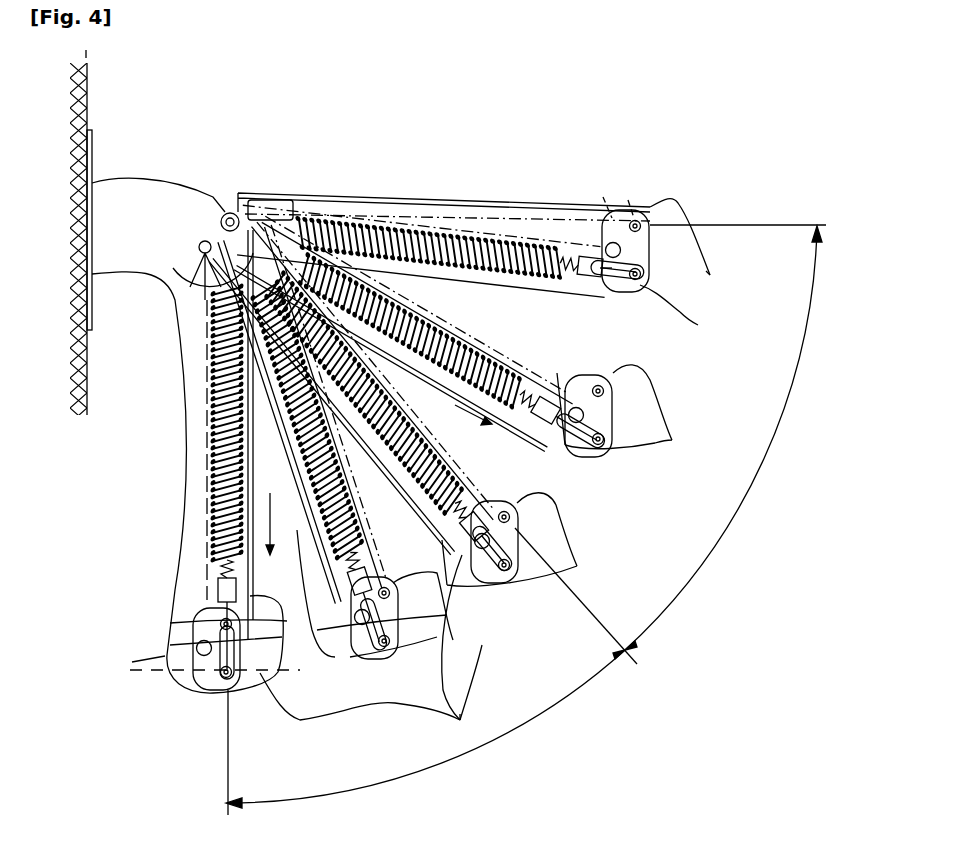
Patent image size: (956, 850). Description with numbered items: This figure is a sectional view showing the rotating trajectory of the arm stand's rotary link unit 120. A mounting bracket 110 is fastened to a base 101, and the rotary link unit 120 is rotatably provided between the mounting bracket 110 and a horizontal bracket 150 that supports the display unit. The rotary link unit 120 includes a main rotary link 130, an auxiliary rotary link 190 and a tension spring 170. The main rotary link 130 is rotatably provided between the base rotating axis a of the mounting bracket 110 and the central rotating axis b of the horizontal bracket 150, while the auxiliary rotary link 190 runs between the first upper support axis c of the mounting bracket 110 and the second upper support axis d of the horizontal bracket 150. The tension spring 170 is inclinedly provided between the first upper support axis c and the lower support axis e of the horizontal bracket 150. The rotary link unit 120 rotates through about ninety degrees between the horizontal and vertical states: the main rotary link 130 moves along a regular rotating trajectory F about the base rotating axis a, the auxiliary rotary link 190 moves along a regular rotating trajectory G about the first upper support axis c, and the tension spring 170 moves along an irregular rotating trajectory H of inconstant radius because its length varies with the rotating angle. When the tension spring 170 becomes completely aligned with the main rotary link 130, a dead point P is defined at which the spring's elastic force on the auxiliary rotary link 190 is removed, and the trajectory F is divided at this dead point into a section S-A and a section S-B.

The base 101 is at (97, 322).
The mounting bracket 110 is at (155, 205).
The rotary link unit 120 is at (384, 376).
The main rotary link 130 is at (381, 194).
The horizontal bracket 150 is at (663, 205).
The tension spring 170 is at (516, 248).
The auxiliary rotary link 190 is at (488, 196).
The base rotating axis a is at (198, 287).
The central rotating axis b is at (600, 268).
The first upper support axis c is at (236, 213).
The second upper support axis d is at (706, 276).
The lower support axis e is at (680, 312).
The rotating trajectory F is at (605, 192).
The rotating trajectory G is at (626, 200).
The rotating trajectory H is at (468, 725).
The dead point P is at (582, 605).
The section S-A is at (719, 442).
The section S-B is at (425, 732).